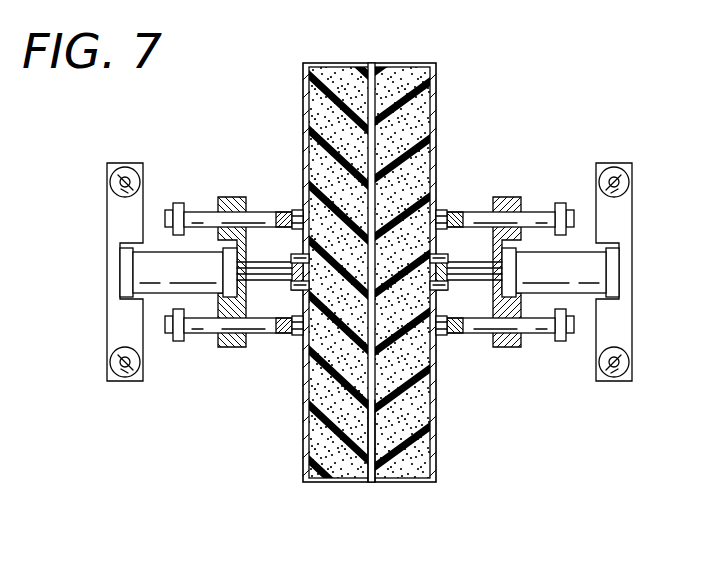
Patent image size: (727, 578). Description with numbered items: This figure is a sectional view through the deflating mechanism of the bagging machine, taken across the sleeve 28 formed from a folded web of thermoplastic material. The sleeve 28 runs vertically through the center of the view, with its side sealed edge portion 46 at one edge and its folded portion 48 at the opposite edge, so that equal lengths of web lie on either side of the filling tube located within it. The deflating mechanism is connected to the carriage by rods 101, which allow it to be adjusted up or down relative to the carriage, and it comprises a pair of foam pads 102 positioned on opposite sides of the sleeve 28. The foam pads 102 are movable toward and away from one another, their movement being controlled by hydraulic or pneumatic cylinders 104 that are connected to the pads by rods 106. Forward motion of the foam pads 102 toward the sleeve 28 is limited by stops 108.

The sleeve 28 is at (381, 122).
The side sealed edge portion 46 is at (372, 468).
The folded portion 48 is at (377, 72).
The rods 101 is at (127, 177).
The foam pads 102 is at (318, 100).
The cylinders 104 is at (369, 272).
The rods 106 is at (263, 266).
The stops 108 is at (198, 217).